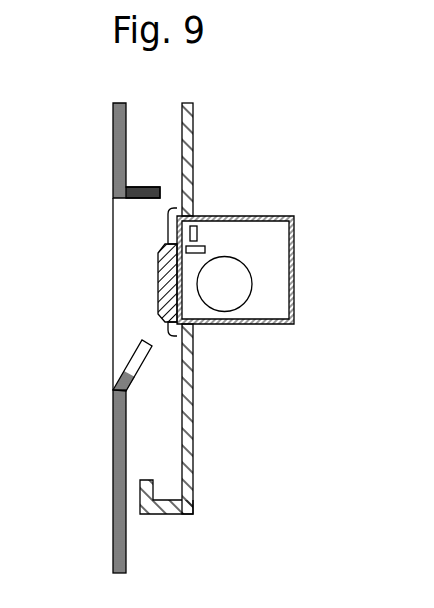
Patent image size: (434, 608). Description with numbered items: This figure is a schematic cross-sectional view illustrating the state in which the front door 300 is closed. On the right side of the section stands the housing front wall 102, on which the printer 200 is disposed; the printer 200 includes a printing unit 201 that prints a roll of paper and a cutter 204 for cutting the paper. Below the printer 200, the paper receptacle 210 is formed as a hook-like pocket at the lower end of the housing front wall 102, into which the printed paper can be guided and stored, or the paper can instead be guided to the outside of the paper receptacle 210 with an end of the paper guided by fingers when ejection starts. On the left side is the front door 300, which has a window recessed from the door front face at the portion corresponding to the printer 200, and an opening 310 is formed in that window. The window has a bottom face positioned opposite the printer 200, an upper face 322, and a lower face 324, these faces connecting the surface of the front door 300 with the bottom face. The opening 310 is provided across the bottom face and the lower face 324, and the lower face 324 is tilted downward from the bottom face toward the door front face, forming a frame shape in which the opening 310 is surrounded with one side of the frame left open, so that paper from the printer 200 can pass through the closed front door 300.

The housing front wall 102 is at (193, 114).
The printer 200 is at (286, 254).
The printing unit 201 is at (198, 233).
The cutter 204 is at (173, 233).
The paper receptacle 210 is at (165, 452).
The front door 300 is at (98, 338).
The opening 310 is at (113, 290).
The upper face 322 is at (122, 199).
The lower face 324 is at (113, 367).